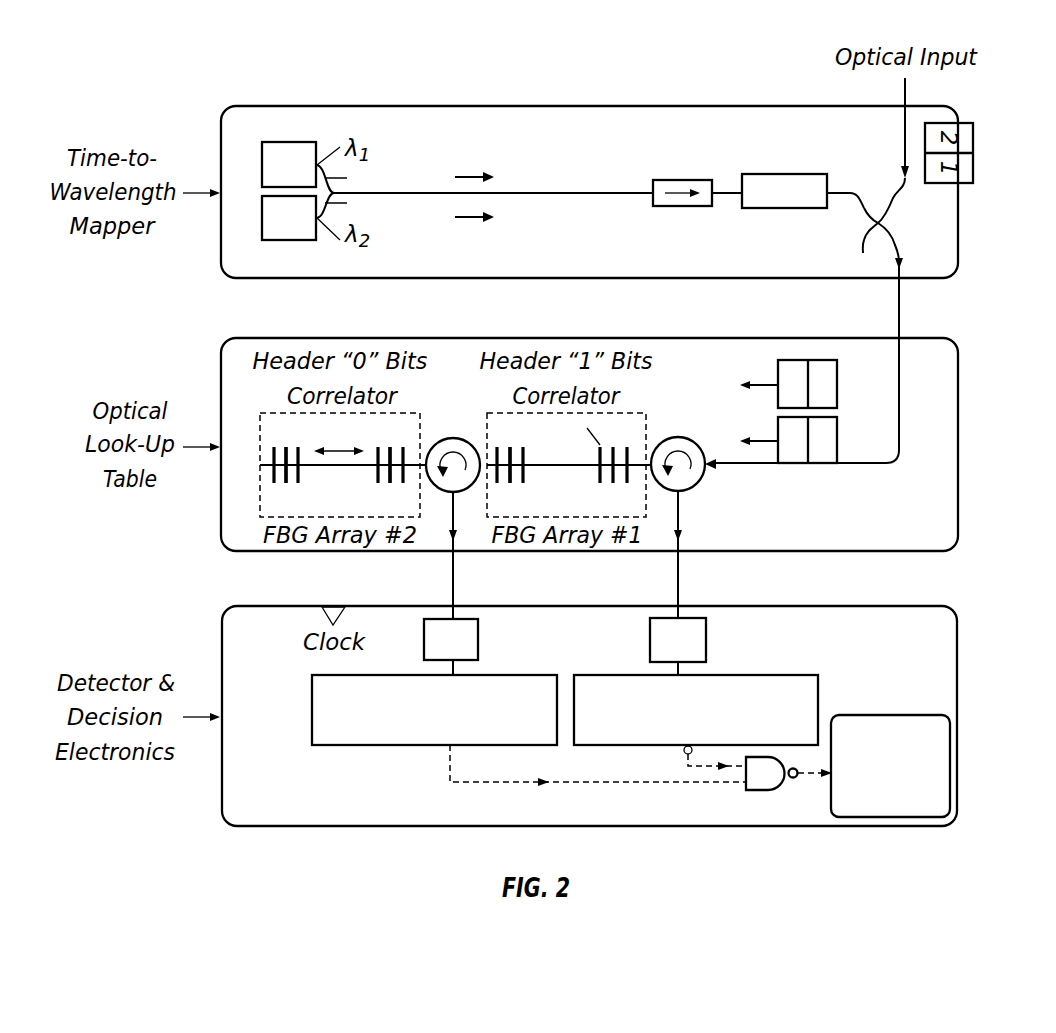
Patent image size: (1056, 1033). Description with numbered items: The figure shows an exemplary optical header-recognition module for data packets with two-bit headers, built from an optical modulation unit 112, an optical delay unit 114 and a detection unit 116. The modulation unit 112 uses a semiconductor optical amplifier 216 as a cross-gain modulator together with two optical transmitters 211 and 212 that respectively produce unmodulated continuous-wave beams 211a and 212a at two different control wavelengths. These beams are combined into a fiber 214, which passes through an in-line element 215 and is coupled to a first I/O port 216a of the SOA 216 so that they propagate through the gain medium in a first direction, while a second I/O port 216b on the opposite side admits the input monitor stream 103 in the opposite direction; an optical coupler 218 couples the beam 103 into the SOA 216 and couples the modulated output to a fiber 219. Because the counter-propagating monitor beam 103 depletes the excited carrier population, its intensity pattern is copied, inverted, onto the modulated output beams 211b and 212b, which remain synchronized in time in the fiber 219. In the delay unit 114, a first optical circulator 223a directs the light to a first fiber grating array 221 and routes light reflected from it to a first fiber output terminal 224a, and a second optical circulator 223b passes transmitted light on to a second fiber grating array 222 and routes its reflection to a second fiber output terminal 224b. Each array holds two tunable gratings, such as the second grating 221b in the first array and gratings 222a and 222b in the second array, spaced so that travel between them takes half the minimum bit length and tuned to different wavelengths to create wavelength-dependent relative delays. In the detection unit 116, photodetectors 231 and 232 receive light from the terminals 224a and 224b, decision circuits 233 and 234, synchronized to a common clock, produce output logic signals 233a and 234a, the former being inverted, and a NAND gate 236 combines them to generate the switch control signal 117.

The input monitor stream 103 is at (905, 123).
The optical modulation unit 112 is at (958, 250).
The optical delay unit 114 is at (958, 397).
The detection unit 116 is at (958, 662).
The switch control signal 117 is at (807, 778).
The optical transmitter 211 is at (300, 142).
The continuous wave optical beam 211a is at (475, 172).
The modulated output beam 211b is at (762, 383).
The optical transmitter 212 is at (300, 242).
The continuous wave optical beam 212a is at (475, 222).
The modulated output beam 212b is at (762, 439).
The fiber 214 is at (600, 192).
The optical isolator 215 is at (668, 178).
The semiconductor optical amplifier 216 is at (758, 173).
The first I/O port 216a is at (742, 178).
The second I/O port 216b is at (829, 186).
The optical coupler 218 is at (886, 222).
The fiber 219 is at (890, 252).
The first fiber grating array 221 is at (637, 410).
The second fiber grating 221b is at (510, 447).
The second fiber grating array 222 is at (275, 413).
The fiber grating 222a is at (388, 485).
The fiber grating 222b is at (287, 483).
The first optical circulator 223a is at (698, 483).
The second optical circulator 223b is at (460, 495).
The first fiber output terminal 224a is at (680, 515).
The second fiber output terminal 224b is at (452, 495).
The photodetector 231 is at (708, 638).
The photodetector 232 is at (480, 638).
The decision circuit 233 is at (762, 673).
The output logic signal 233a is at (697, 770).
The decision circuit 234 is at (525, 673).
The output logic signal 234a is at (495, 787).
The NAND gate 236 is at (762, 783).